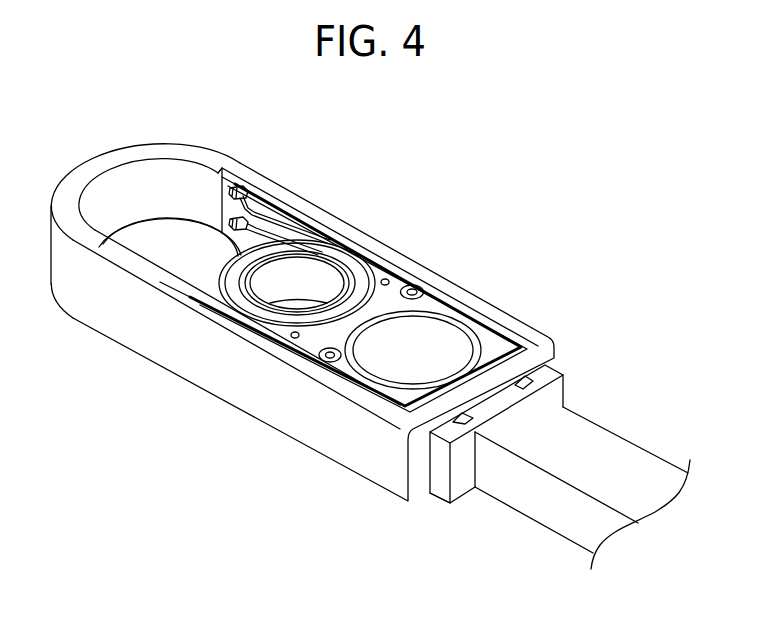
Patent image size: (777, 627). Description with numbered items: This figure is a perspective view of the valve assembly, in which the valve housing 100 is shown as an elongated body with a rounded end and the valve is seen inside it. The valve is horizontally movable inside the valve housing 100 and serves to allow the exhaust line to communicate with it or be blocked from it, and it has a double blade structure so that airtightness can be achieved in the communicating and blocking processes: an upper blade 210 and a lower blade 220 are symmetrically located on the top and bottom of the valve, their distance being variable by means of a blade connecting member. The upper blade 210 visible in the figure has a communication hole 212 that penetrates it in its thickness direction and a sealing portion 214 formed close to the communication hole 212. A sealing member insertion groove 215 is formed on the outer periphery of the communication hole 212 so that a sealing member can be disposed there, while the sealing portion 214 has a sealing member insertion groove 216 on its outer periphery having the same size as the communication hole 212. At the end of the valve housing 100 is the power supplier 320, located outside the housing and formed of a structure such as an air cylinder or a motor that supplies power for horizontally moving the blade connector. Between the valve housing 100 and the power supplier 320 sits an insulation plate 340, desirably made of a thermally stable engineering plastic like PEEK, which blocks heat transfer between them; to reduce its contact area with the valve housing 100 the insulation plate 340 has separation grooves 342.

The valve housing 100 is at (293, 420).
The upper blade 210 is at (388, 297).
The communication hole 212 is at (303, 273).
The sealing portion 214 is at (433, 343).
The sealing member insertion groove 215 is at (390, 243).
The sealing member insertion groove 216 is at (477, 341).
The lower blade 220 is at (421, 281).
The power supplier 320 is at (590, 440).
The insulation plate 340 is at (430, 488).
The separation grooves 342 is at (440, 474).